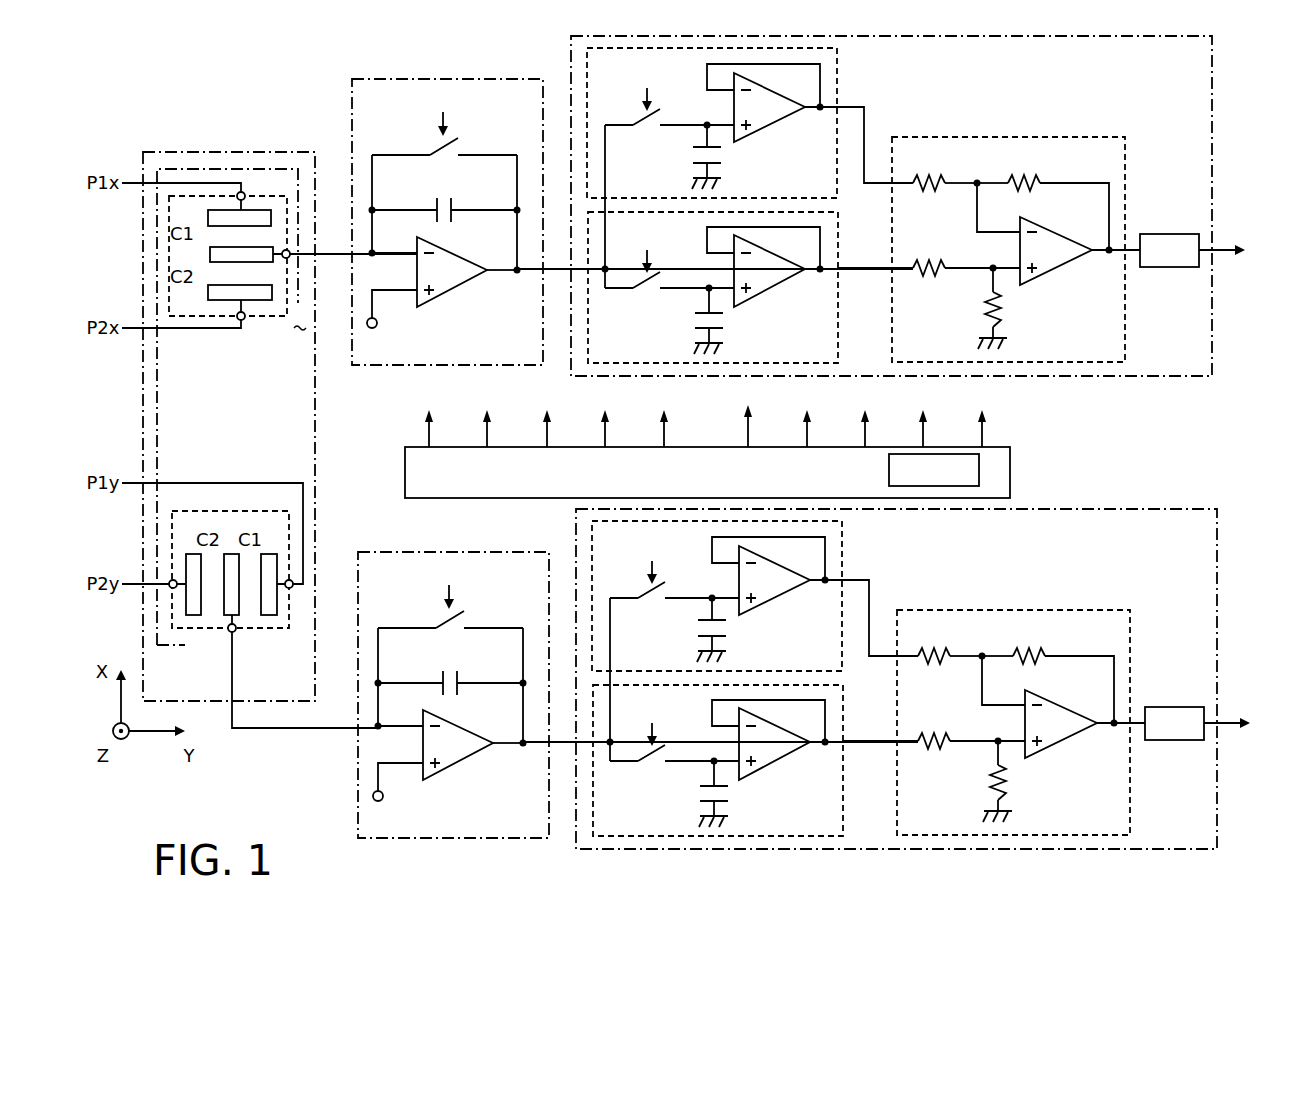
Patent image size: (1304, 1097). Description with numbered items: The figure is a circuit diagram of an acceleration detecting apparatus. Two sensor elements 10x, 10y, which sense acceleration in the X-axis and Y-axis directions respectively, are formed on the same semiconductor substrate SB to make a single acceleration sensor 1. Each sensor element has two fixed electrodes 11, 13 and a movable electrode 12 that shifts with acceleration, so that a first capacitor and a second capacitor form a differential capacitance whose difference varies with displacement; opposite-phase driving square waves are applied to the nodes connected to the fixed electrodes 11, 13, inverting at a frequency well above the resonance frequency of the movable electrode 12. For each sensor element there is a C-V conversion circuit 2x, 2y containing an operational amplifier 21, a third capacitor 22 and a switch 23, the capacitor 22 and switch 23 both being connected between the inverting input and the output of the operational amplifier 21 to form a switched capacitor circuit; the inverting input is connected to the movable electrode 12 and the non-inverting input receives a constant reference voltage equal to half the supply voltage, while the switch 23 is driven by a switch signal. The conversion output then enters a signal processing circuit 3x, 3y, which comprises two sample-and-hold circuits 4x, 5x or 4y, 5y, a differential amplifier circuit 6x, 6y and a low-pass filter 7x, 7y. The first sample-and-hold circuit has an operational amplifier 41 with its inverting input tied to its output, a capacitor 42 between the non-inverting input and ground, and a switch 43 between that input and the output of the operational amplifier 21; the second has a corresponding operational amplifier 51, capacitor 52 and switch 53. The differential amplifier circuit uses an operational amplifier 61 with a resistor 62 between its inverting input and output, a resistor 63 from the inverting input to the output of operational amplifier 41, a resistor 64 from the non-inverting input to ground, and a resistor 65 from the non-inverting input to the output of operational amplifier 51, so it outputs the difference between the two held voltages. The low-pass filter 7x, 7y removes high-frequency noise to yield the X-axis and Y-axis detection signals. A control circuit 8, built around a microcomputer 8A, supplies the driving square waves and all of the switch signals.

The semiconductor substrate SB is at (180, 151).
The acceleration sensor 1 is at (217, 168).
The sensor element 10x is at (265, 317).
The sensor element 10y is at (208, 630).
The fixed electrode 11 is at (262, 210).
The movable electrode 12 is at (265, 247).
The fixed electrode 13 is at (262, 285).
The C-V conversion circuit 2x is at (504, 78).
The C-V conversion circuit 2y is at (453, 674).
The operational amplifier 21 is at (456, 292).
The third capacitor 22 is at (432, 206).
The switch 23 is at (436, 148).
The signal processing circuit 3x is at (1213, 73).
The signal processing circuit 3y is at (912, 679).
The sample-and-hold circuit 4x is at (838, 70).
The sample-and-hold circuit 4y is at (740, 596).
The operational amplifier 41 is at (776, 123).
The capacitor 42 is at (722, 160).
The switch 43 is at (648, 131).
The sample-and-hold circuit 5x is at (839, 236).
The sample-and-hold circuit 5y is at (740, 760).
The operational amplifier 51 is at (776, 286).
The capacitor 52 is at (724, 323).
The switch 53 is at (648, 294).
The differential amplifier circuit 6x is at (1043, 136).
The differential amplifier circuit 6y is at (1013, 704).
The operational amplifier 61 is at (1060, 272).
The resistor 62 is at (1027, 179).
The resistor 63 is at (932, 179).
The resistor 64 is at (1000, 310).
The resistor 65 is at (932, 265).
The low-pass filter 7x is at (1165, 234).
The low-pass filter 7y is at (1196, 707).
The control circuit 8 is at (734, 443).
The microcomputer 8A is at (980, 470).